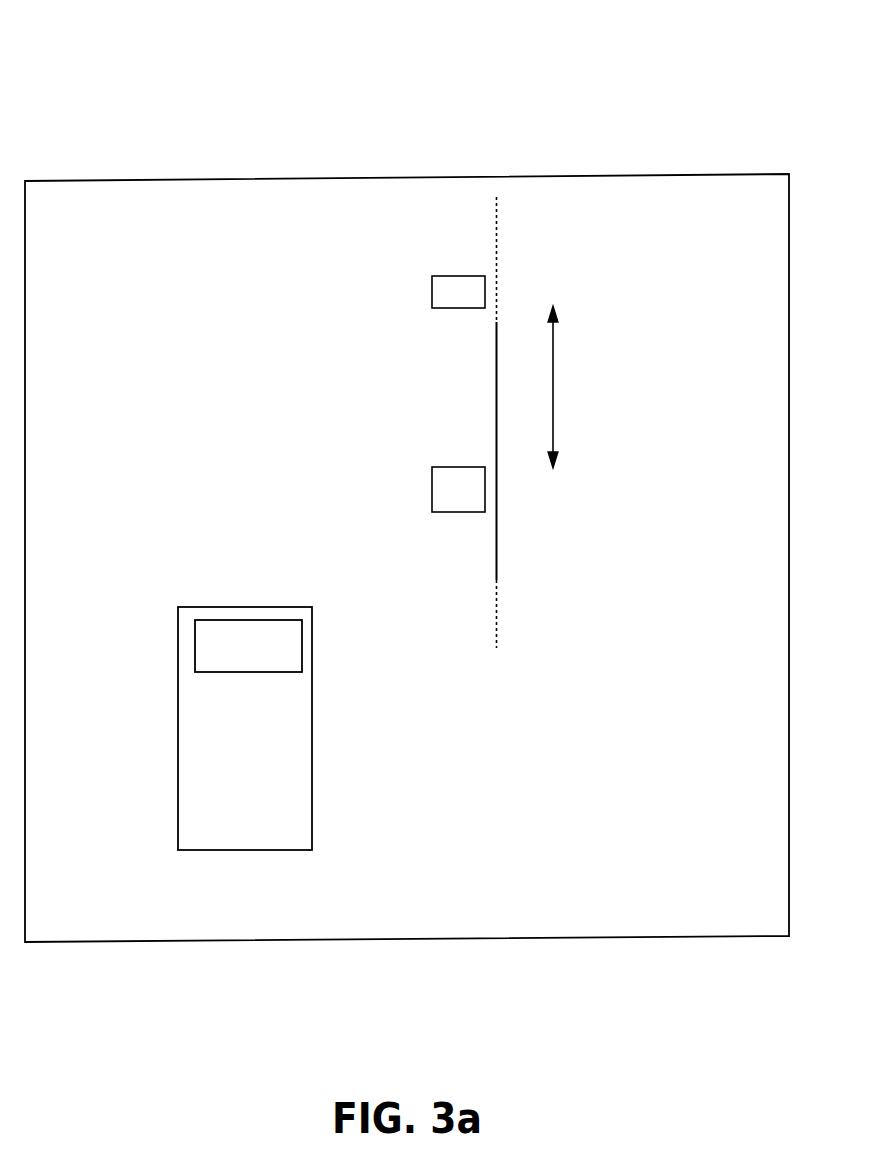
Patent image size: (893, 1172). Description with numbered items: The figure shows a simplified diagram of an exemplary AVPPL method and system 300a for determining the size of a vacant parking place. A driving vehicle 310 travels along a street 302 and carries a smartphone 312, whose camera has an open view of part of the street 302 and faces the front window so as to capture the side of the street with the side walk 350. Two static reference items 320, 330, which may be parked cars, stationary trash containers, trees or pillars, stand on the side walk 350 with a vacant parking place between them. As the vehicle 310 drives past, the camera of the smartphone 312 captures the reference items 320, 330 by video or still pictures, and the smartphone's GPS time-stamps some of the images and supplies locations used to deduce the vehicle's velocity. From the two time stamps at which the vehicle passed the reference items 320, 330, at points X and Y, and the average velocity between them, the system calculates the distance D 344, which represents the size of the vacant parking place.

The AVPPL method and system 300a is at (407, 525).
The street 302 is at (407, 601).
The driving vehicle 310 is at (196, 725).
The smartphone 312 is at (197, 636).
The static reference item 320 is at (432, 280).
The static reference item 330 is at (432, 476).
The distance D 344 is at (660, 381).
The side walk 350 is at (562, 422).